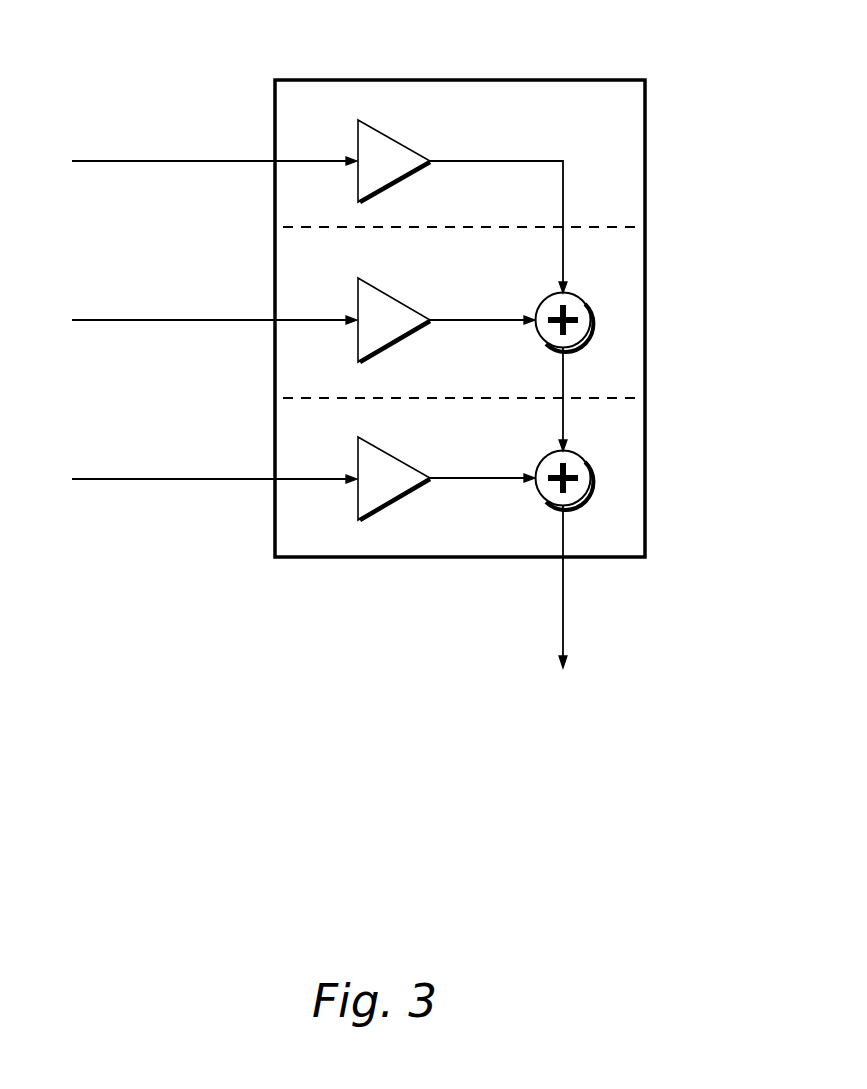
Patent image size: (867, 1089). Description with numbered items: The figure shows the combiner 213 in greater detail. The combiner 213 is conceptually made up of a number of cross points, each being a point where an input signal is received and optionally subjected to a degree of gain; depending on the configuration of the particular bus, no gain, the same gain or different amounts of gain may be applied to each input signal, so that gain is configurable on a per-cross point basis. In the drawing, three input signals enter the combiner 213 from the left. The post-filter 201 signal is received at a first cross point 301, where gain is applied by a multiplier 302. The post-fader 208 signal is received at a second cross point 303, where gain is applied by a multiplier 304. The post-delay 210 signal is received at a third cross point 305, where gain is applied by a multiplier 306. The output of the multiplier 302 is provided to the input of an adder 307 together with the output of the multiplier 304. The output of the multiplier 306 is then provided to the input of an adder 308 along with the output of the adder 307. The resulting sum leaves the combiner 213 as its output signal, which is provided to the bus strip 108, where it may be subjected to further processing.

The combiner 213 is at (297, 79).
The post-filter signal 201 is at (214, 149).
The post-fader signal 208 is at (214, 308).
The post-delay signal 210 is at (214, 466).
The multiplier 302 is at (397, 147).
The multiplier 304 is at (397, 305).
The multiplier 306 is at (397, 463).
The adder 307 is at (552, 293).
The adder 308 is at (552, 451).
The first cross point 301 is at (640, 173).
The second cross point 303 is at (640, 365).
The third cross point 305 is at (640, 532).
The bus strip 108 is at (663, 614).